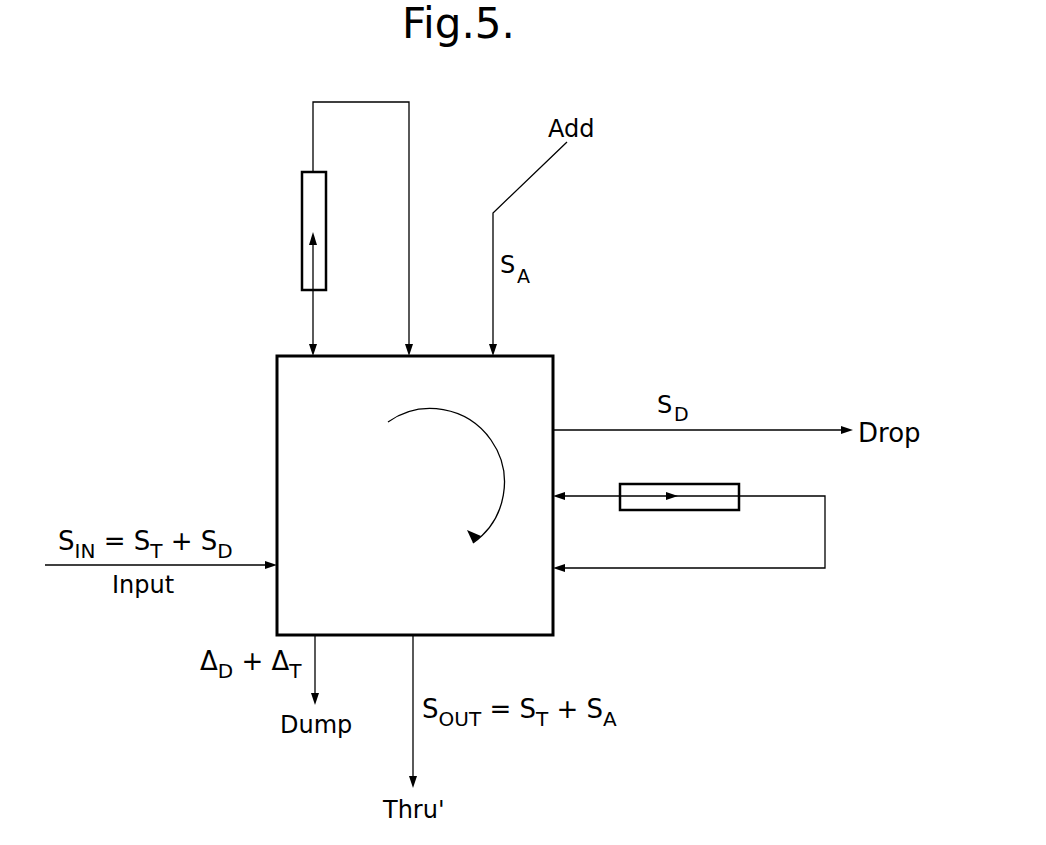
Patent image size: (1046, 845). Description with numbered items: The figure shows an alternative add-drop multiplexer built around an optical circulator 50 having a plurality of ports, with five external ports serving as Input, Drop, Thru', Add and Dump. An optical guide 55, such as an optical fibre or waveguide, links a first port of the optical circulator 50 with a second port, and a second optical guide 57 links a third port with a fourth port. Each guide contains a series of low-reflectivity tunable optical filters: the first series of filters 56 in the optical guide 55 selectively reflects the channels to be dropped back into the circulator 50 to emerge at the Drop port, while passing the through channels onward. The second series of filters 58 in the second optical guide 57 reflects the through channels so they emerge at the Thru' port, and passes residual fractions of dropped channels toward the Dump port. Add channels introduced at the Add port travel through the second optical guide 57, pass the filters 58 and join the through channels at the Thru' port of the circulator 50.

The optical circulator 50 is at (428, 507).
The optical guide 55 is at (409, 157).
The tunable optical filters 56 is at (313, 215).
The second optical guide 57 is at (825, 543).
The second series of filters 58 is at (698, 490).